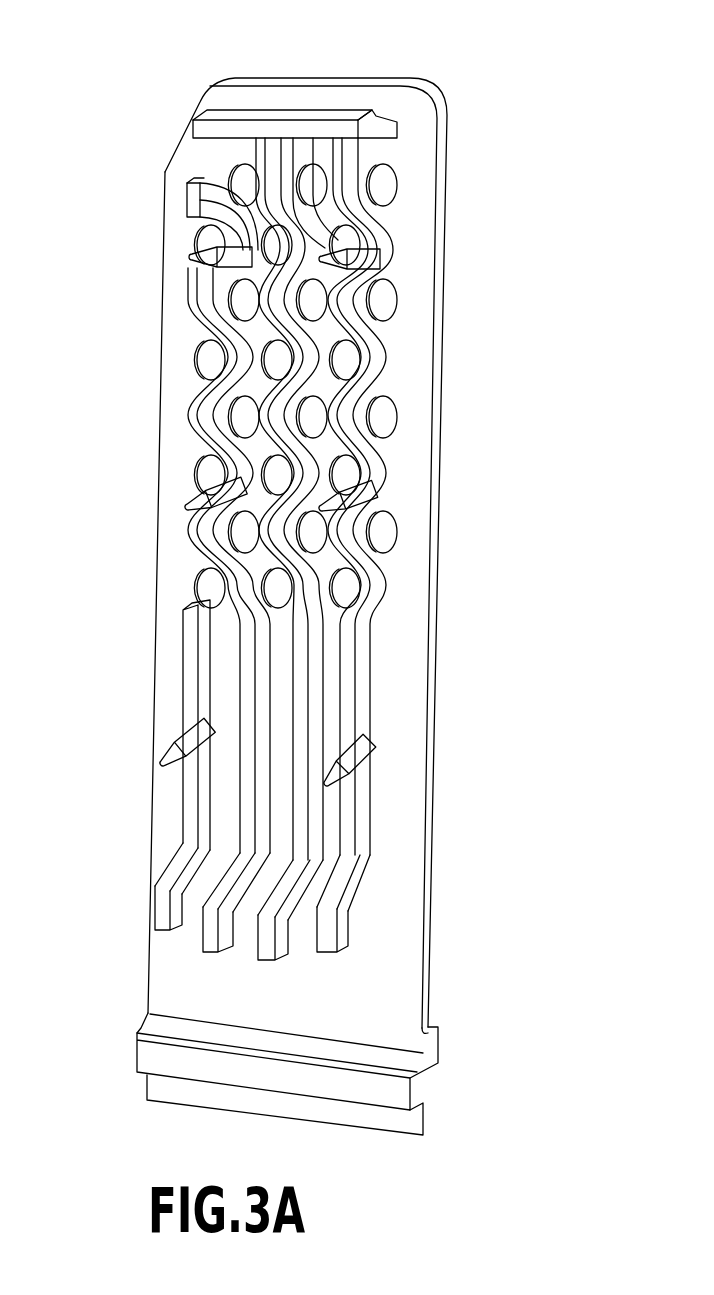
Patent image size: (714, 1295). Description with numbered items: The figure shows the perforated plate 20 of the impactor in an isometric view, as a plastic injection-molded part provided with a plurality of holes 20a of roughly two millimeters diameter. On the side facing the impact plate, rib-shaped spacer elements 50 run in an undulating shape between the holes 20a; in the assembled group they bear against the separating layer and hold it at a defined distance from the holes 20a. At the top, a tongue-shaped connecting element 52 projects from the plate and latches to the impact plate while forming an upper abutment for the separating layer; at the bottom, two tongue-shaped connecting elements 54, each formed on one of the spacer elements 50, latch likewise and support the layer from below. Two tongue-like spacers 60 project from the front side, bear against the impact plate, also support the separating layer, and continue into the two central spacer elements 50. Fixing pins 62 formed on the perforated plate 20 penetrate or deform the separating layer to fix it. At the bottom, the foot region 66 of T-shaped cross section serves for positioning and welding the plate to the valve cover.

The perforated plate 20 is at (505, 60).
The holes 20a is at (385, 185).
The spacer elements 50 is at (303, 658).
The connecting element 52 is at (338, 116).
The connecting elements 54 is at (160, 876).
The spacers 60 is at (268, 948).
The fixing pins 62 is at (380, 257).
The foot region 66 is at (466, 1092).